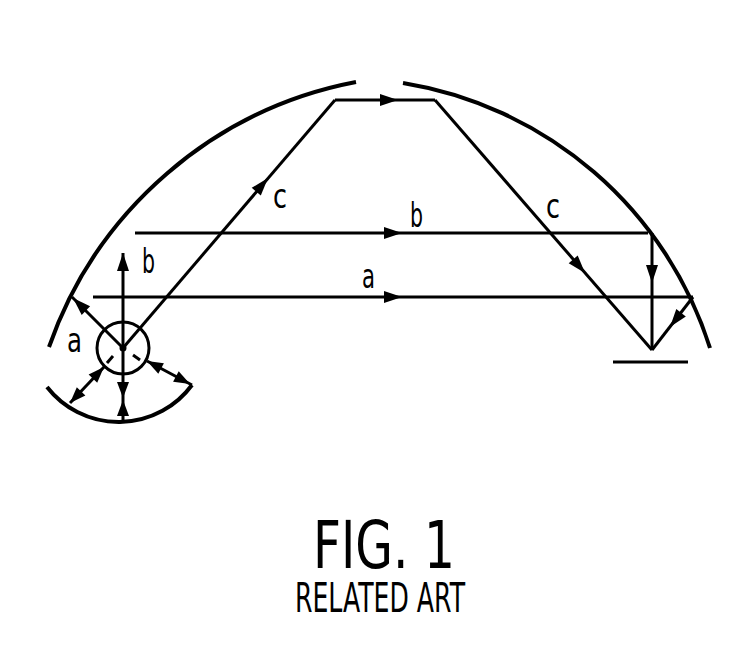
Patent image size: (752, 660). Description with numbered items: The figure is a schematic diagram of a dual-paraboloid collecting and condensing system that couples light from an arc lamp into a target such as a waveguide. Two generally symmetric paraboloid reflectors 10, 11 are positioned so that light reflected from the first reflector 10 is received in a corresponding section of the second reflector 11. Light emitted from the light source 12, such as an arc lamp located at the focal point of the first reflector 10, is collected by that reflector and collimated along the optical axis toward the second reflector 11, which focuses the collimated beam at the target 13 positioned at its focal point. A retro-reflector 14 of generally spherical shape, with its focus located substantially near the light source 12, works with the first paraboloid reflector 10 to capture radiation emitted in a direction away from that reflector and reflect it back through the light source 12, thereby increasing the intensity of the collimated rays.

The first paraboloid reflector 10 is at (198, 132).
The second paraboloid reflector 11 is at (568, 150).
The light source 12 is at (168, 344).
The target 13 is at (647, 375).
The retro-reflector 14 is at (99, 433).